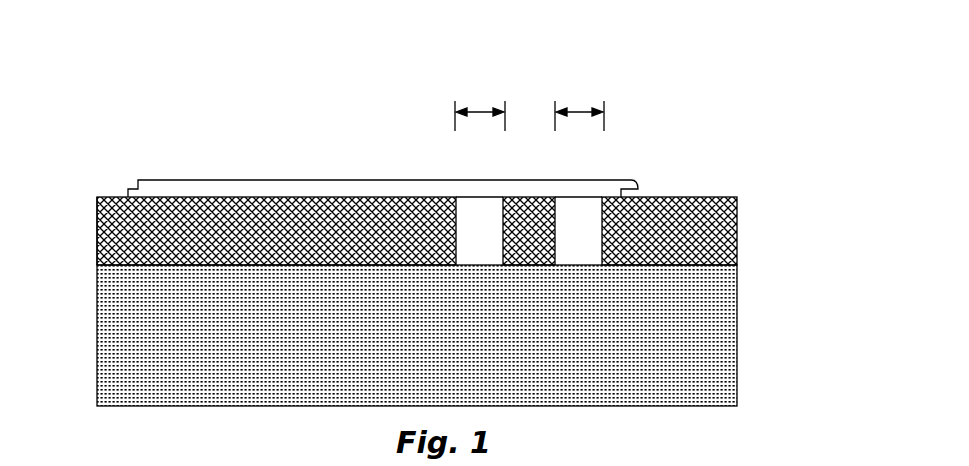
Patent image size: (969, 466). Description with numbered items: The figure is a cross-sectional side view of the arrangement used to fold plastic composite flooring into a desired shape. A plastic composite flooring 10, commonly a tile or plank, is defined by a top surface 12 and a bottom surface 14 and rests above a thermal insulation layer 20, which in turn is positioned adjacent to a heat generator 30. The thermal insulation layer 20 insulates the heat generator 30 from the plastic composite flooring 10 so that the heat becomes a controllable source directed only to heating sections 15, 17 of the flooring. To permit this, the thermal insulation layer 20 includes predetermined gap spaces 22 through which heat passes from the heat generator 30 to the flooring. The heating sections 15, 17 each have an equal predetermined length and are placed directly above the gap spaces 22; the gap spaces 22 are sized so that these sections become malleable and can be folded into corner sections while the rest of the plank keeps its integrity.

The plastic composite flooring 10 is at (648, 169).
The top surface 12 is at (140, 165).
The bottom surface 14 is at (88, 222).
The heating section 15 is at (472, 91).
The heating section 17 is at (572, 93).
The thermal insulation layer 20 is at (726, 250).
The gap space 22 is at (459, 210).
The heat generator 30 is at (718, 316).